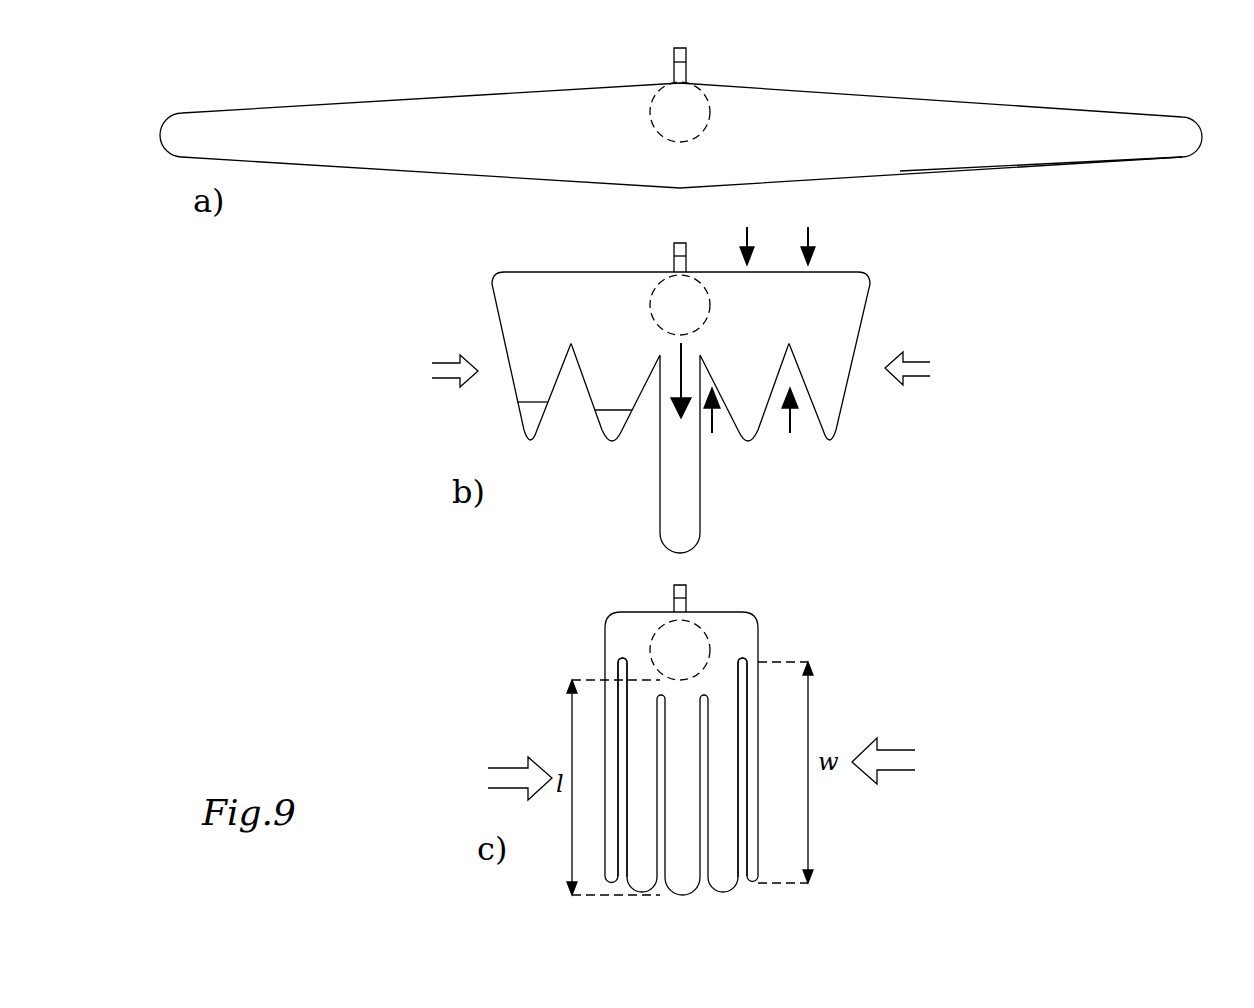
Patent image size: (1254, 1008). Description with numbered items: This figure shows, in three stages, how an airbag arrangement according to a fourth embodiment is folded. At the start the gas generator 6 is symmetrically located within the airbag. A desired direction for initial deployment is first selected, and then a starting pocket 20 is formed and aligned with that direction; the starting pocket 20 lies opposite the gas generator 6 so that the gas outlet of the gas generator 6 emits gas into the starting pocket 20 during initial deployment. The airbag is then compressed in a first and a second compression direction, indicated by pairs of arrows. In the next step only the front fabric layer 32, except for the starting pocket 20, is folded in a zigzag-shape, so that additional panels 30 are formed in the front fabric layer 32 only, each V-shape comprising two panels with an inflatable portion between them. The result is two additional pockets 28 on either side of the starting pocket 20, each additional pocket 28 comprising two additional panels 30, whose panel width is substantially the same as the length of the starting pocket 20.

The front fabric layer 32 is at (985, 172).
The gas generator 6 is at (668, 123).
The starting pocket 20 is at (668, 475).
The additional panels 30 is at (546, 402).
The additional pockets 28 is at (612, 775).